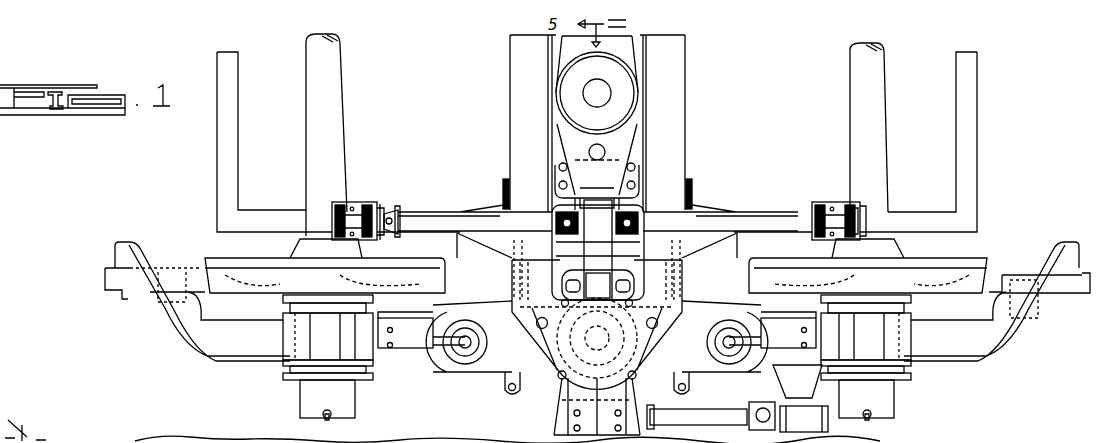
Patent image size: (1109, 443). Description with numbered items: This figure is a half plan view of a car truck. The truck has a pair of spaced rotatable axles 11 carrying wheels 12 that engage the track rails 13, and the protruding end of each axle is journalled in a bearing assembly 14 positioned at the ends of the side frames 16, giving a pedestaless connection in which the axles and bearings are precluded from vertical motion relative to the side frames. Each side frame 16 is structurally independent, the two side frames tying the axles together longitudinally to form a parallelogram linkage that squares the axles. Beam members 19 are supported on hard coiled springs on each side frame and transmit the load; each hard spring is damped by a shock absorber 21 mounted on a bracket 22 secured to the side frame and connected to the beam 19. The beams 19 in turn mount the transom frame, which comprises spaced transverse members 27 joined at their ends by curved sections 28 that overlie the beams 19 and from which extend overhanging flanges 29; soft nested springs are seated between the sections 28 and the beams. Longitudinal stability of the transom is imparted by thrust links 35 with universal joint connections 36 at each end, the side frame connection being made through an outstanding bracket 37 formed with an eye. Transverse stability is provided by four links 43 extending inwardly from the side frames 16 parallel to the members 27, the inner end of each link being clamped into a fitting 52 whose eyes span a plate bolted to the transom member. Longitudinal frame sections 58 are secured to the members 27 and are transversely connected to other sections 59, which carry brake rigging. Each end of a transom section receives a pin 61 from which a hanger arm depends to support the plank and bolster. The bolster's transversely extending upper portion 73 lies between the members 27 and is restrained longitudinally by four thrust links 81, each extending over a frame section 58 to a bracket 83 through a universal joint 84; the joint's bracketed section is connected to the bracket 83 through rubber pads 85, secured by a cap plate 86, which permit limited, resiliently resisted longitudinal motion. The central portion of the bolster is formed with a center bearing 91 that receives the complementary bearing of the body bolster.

The axle 11 is at (340, 77).
The wheel 12 is at (204, 256).
The track rail 13 is at (108, 292).
The bearing assembly 14 is at (284, 376).
The side frame 16 is at (202, 354).
The beam member 19 is at (500, 375).
The shock absorber 21 is at (402, 322).
The bracket 22 is at (380, 350).
The transom member 27 is at (510, 126).
The curved section 28 is at (541, 390).
The overhanging flange 29 is at (552, 434).
The thrust link 35 is at (692, 408).
The universal joint connection 36 is at (766, 402).
The outstanding bracket 37 is at (812, 430).
The link 43 is at (490, 270).
The fitting 52 is at (503, 190).
The frame section 58 is at (428, 236).
The frame section 59 is at (238, 113).
The pin 61 is at (597, 294).
The upper portion of bolster 73 is at (628, 52).
The thrust link 81 is at (430, 211).
The bracket 83 is at (376, 202).
The universal joint 84 is at (392, 212).
The rubber pad 85 is at (352, 202).
The cap plate 86 is at (840, 202).
The center bearing 91 is at (612, 95).